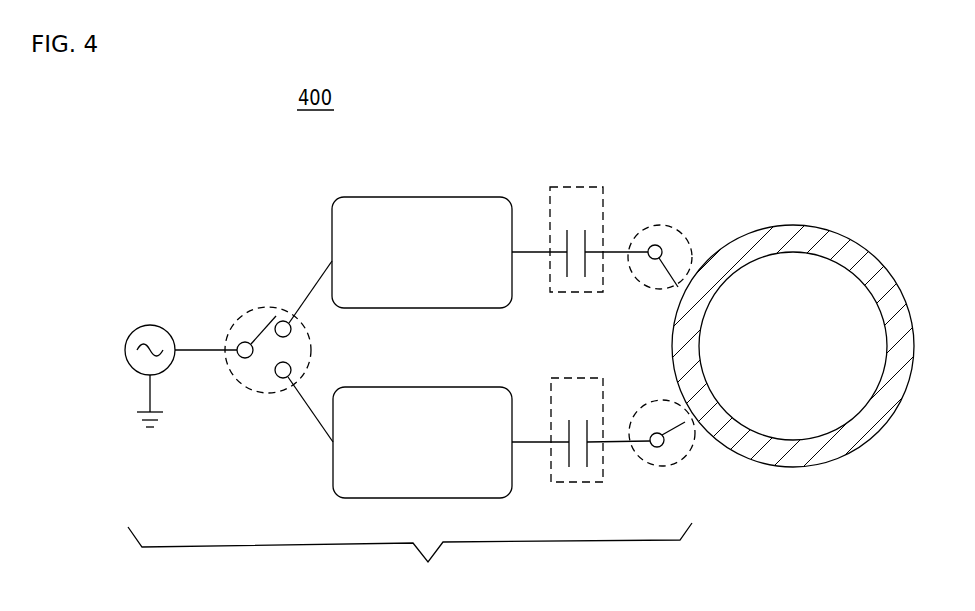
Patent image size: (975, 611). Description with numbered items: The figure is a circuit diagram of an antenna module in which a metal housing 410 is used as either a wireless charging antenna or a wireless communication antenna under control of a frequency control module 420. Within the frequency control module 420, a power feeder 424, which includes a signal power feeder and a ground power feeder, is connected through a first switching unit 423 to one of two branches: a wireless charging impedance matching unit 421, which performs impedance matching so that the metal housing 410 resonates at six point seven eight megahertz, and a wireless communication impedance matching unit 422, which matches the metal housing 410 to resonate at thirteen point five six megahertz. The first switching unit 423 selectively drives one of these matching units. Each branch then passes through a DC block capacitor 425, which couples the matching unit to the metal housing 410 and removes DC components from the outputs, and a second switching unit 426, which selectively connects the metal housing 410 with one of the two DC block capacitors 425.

The metal housing 410 is at (790, 226).
The frequency control module 420 is at (410, 557).
The wireless charging impedance matching unit 421 is at (420, 197).
The wireless communication impedance matching unit 422 is at (333, 458).
The first switching unit 423 is at (252, 308).
The power feeder 424 is at (127, 334).
The DC block capacitor 425 is at (577, 187).
The second switching unit 426 is at (668, 227).